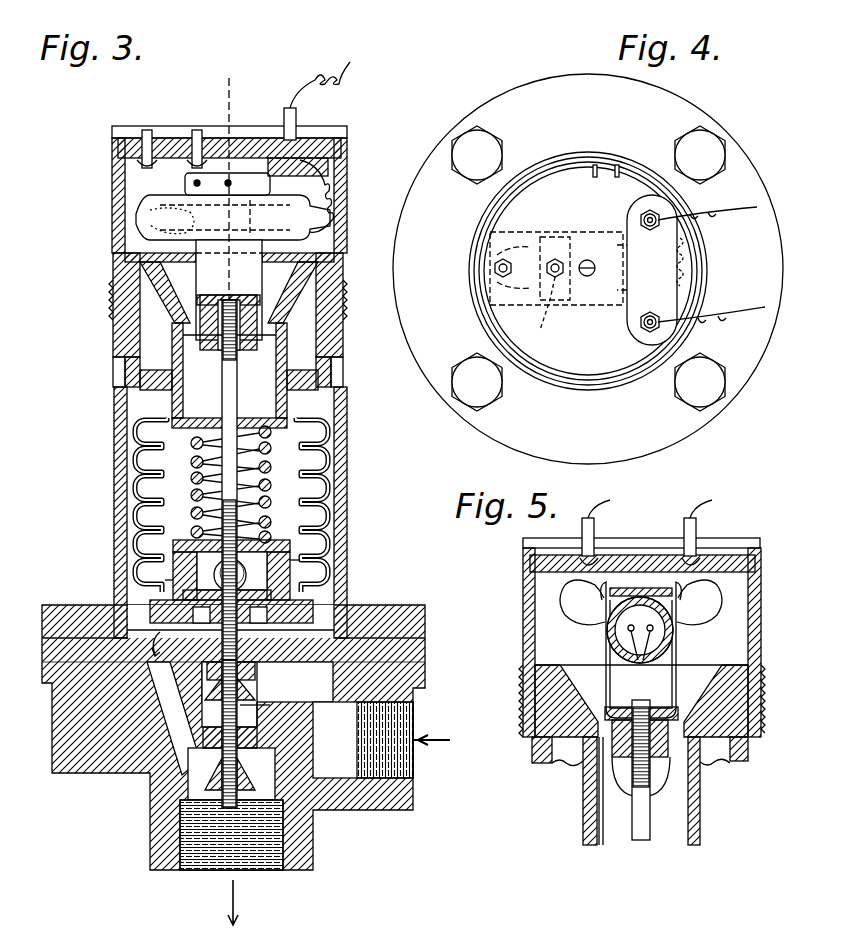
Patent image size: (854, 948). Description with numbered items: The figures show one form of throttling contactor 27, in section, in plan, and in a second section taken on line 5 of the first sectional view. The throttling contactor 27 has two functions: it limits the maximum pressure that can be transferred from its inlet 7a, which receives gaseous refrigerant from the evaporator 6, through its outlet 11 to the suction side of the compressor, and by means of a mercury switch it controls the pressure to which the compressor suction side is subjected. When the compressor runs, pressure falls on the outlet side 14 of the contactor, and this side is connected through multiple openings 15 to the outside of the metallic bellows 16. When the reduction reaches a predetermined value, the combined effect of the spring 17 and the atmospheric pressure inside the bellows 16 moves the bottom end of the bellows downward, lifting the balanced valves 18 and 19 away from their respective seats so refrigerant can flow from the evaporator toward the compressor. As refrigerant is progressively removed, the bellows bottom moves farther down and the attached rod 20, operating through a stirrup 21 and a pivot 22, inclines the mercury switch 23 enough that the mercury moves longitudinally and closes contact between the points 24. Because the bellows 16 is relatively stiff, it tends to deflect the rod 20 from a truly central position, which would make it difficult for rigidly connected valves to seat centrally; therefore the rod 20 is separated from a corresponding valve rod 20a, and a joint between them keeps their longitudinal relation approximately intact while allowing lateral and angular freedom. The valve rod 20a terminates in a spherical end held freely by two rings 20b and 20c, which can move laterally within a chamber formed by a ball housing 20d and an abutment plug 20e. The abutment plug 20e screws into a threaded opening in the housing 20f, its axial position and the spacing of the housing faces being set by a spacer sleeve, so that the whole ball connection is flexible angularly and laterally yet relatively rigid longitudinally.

In FIG. 3, the section line 5 is at (218, 92).
In FIG. 3, the evaporator 6 is at (317, 93).
In FIG. 5, the evaporator 6 is at (647, 528).
In FIG. 3, the inlet 7a is at (382, 748).
In FIG. 3, the outlet 11 is at (262, 862).
In FIG. 3, the outlet side 14 is at (130, 538).
In FIG. 3, the multiple openings 15 is at (175, 712).
In FIG. 3, the metallic bellows 16 is at (136, 442).
In FIG. 3, the spring 17 is at (200, 515).
In FIG. 3, the balanced valve 18 is at (258, 690).
In FIG. 3, the balanced valve 19 is at (245, 765).
In FIG. 3, the rod 20 is at (232, 450).
In FIG. 5, the rod 20 is at (650, 813).
In FIG. 3, the valve rod 20a is at (240, 712).
In FIG. 3, the ring 20b is at (205, 560).
In FIG. 3, the ring 20c is at (170, 590).
In FIG. 3, the ball housing 20d is at (175, 578).
In FIG. 3, the abutment plug 20e is at (276, 640).
In FIG. 3, the housing 20f is at (290, 560).
In FIG. 3, the stirrup 21 is at (262, 268).
In FIG. 5, the stirrup 21 is at (702, 655).
In FIG. 3, the pivot 22 is at (197, 180).
In FIG. 4, the pivot 22 is at (537, 317).
In FIG. 3, the mercury switch 23 is at (165, 200).
In FIG. 4, the mercury switch 23 is at (492, 290).
In FIG. 5, the mercury switch 23 is at (668, 640).
In FIG. 3, the contact points 24 is at (338, 207).
In FIG. 4, the contact points 24 is at (670, 266).
In FIG. 5, the contact points 24 is at (638, 660).
In FIG. 3, the throttling contactor 27 is at (118, 472).
In FIG. 4, the throttling contactor 27 is at (522, 84).
In FIG. 5, the throttling contactor 27 is at (752, 712).